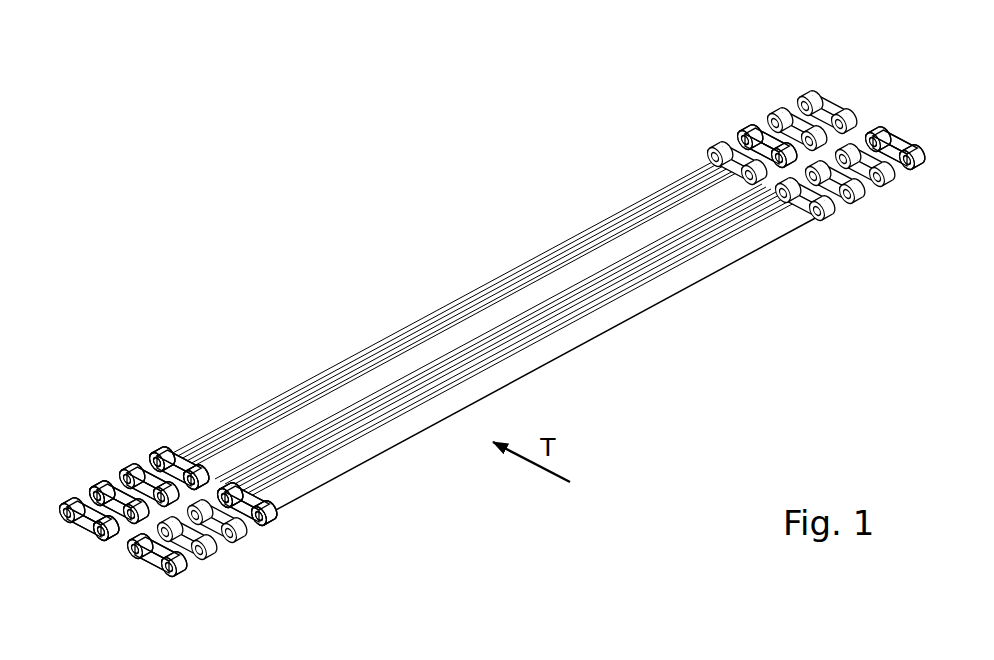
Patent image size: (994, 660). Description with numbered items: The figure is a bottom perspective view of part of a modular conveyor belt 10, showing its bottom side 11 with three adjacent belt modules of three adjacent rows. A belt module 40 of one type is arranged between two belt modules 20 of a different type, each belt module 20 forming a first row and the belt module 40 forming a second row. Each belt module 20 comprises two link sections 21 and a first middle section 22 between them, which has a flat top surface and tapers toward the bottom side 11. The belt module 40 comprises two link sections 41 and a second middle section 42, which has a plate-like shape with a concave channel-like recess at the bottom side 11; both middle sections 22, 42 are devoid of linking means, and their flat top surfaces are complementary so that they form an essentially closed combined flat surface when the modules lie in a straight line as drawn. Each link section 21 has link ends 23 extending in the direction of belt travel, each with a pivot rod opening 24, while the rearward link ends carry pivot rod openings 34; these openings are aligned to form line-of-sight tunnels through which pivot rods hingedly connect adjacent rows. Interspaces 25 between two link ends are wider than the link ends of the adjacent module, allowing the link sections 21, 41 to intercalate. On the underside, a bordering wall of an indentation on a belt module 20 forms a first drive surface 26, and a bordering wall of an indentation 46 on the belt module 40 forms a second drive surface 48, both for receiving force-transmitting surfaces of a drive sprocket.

The modular conveyor belt 10 is at (479, 324).
The bottom side 11 is at (495, 334).
The belt module 20 is at (83, 522).
The link section 21 is at (135, 460).
The first middle section 22 is at (427, 318).
The link end 23 is at (173, 447).
The pivot rod opening 24 is at (167, 463).
The interspace 25 is at (90, 490).
The first drive surface 26 is at (252, 487).
The pivot rod opening 34 is at (265, 513).
The belt module 40 is at (117, 545).
The link section 41 is at (132, 497).
The second middle section 42 is at (507, 317).
The indentation 46 is at (233, 472).
The second drive surface 48 is at (227, 463).